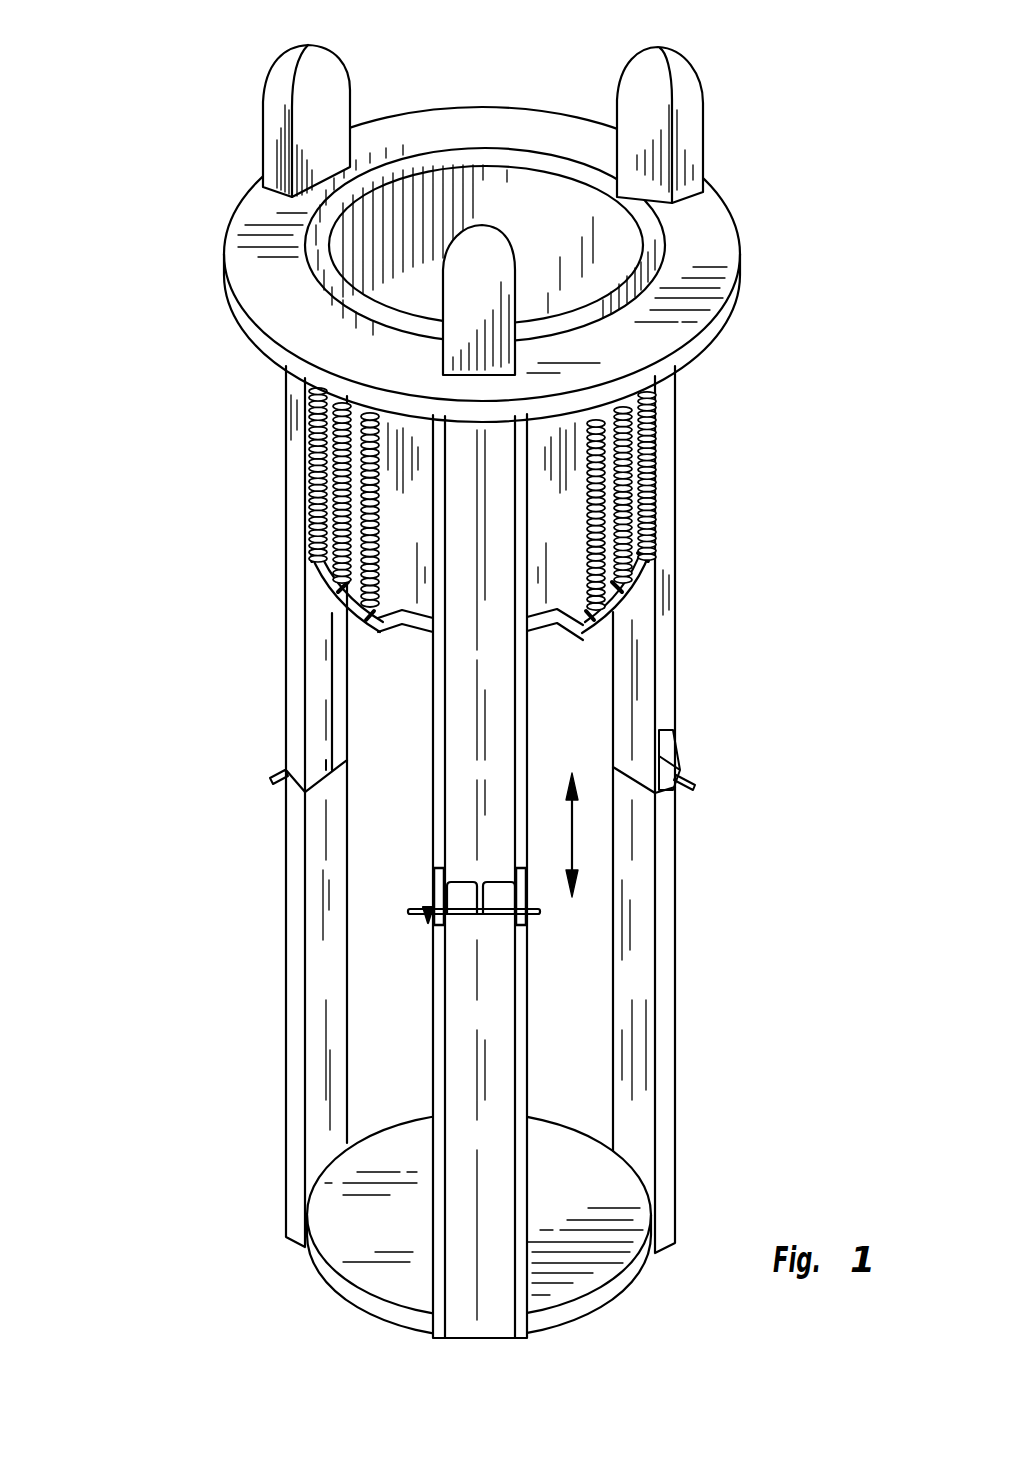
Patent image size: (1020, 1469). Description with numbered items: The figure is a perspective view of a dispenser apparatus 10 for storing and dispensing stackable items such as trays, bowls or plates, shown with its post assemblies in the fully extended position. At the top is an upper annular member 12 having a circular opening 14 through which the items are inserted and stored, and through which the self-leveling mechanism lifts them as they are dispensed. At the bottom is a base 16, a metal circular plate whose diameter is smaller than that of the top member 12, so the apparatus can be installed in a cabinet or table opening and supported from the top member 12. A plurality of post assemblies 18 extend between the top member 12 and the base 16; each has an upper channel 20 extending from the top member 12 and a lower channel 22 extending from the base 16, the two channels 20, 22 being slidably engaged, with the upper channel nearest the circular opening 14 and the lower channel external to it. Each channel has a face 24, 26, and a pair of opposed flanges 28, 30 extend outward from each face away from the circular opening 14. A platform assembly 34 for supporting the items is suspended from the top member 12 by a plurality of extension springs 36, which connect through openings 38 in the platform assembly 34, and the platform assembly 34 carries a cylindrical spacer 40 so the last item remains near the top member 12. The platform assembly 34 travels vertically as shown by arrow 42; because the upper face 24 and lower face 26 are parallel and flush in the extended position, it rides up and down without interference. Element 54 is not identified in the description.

The dispenser apparatus 10 is at (180, 653).
The top annular member 12 is at (238, 267).
The circular opening 14 is at (660, 258).
The base 16 is at (347, 1290).
The post assemblies 18 is at (297, 673).
The upper channel 20 is at (297, 610).
The lower channel 22 is at (300, 1078).
The upper face 24 is at (320, 708).
The lower face 26 is at (318, 900).
The flange 28 is at (446, 925).
The flange 30 is at (525, 972).
The platform assembly 34 is at (655, 585).
The extension springs 36 is at (310, 490).
The openings 38 is at (305, 562).
The cylindrical spacer 40 is at (503, 173).
The arrow 42 is at (574, 838).
The pins 54 is at (275, 778).